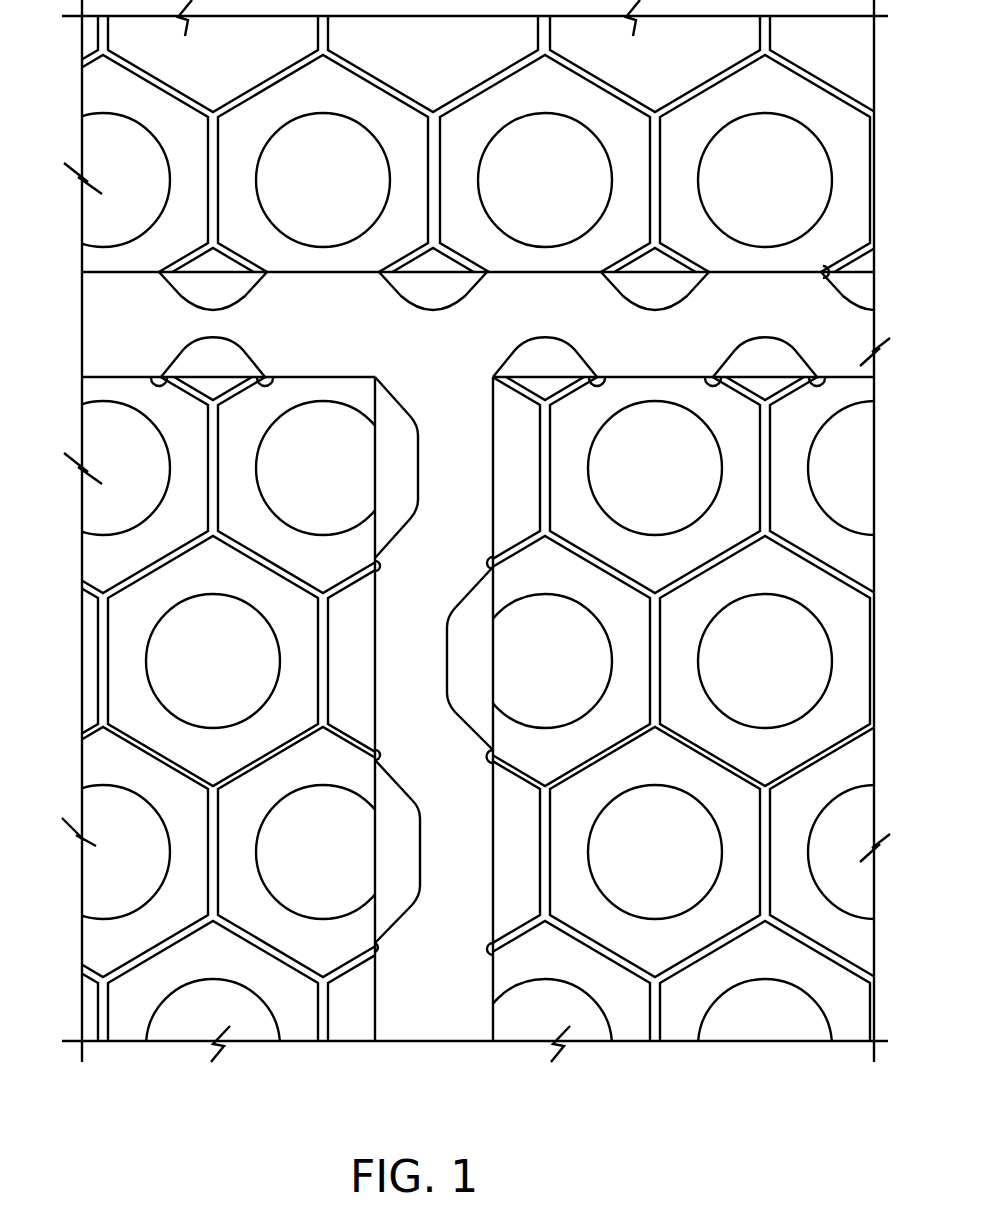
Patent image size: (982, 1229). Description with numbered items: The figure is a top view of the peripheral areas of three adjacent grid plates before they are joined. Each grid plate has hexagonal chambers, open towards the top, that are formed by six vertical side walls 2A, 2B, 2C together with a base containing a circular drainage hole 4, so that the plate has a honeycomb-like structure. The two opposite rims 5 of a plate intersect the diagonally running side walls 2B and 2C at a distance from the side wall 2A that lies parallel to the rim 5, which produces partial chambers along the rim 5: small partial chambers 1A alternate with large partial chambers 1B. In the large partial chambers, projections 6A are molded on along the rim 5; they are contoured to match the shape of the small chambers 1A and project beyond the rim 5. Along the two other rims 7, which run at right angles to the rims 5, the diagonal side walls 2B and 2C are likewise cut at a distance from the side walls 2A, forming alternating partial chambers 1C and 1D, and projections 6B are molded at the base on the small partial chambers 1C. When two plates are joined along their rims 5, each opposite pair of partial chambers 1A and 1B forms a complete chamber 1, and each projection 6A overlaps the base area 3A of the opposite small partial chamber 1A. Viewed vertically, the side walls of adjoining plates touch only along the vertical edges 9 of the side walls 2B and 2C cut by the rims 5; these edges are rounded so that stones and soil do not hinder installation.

The chamber 1 is at (294, 719).
The small partial chamber 1A is at (513, 480).
The large partial chamber 1B is at (490, 745).
The small partial chamber 1C is at (650, 256).
The large partial chamber 1D is at (772, 260).
The side wall 2A is at (214, 174).
The side wall 2B is at (240, 256).
The side wall 2C is at (397, 300).
The base area 3A is at (513, 438).
The drainage hole 4 is at (195, 593).
The rim 5 is at (377, 702).
The projection 6A is at (392, 408).
The projection 6B is at (537, 355).
The rim 7 is at (343, 273).
The vertical edge 9 is at (822, 277).